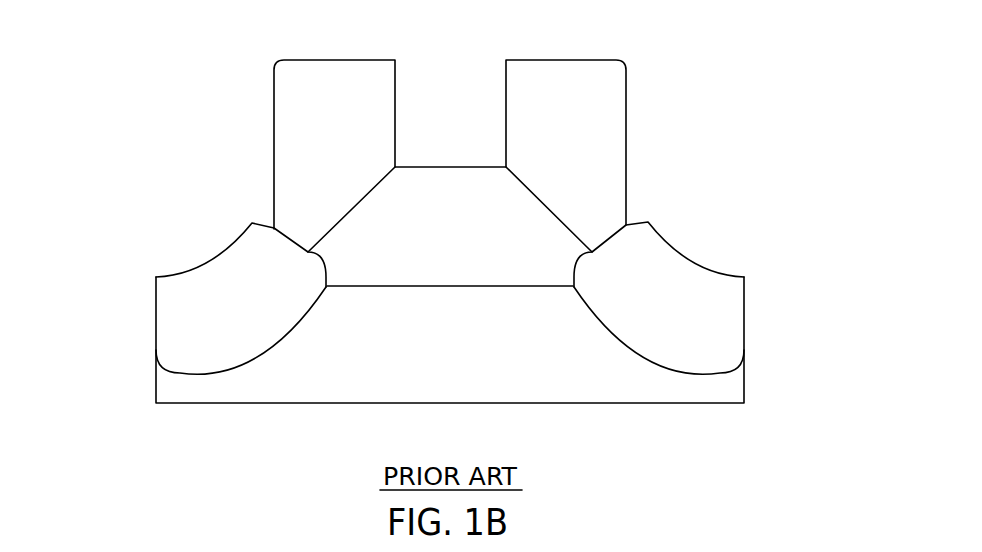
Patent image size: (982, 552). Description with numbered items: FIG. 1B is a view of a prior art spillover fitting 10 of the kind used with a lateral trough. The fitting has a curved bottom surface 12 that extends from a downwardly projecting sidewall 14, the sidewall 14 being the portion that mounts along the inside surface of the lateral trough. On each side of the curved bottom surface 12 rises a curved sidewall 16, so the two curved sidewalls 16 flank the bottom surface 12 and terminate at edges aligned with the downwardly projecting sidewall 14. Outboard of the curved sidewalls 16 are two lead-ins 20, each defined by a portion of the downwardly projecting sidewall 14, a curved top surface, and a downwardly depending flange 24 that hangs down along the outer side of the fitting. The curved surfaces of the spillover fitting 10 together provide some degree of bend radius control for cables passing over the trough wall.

The spillover fitting 10 is at (660, 62).
The curved bottom surface 12 is at (513, 215).
The downwardly projecting sidewall 14 is at (380, 342).
The curved sidewall 16 is at (313, 117).
The lead-in 20 is at (205, 265).
The downwardly depending flange 24 is at (207, 315).